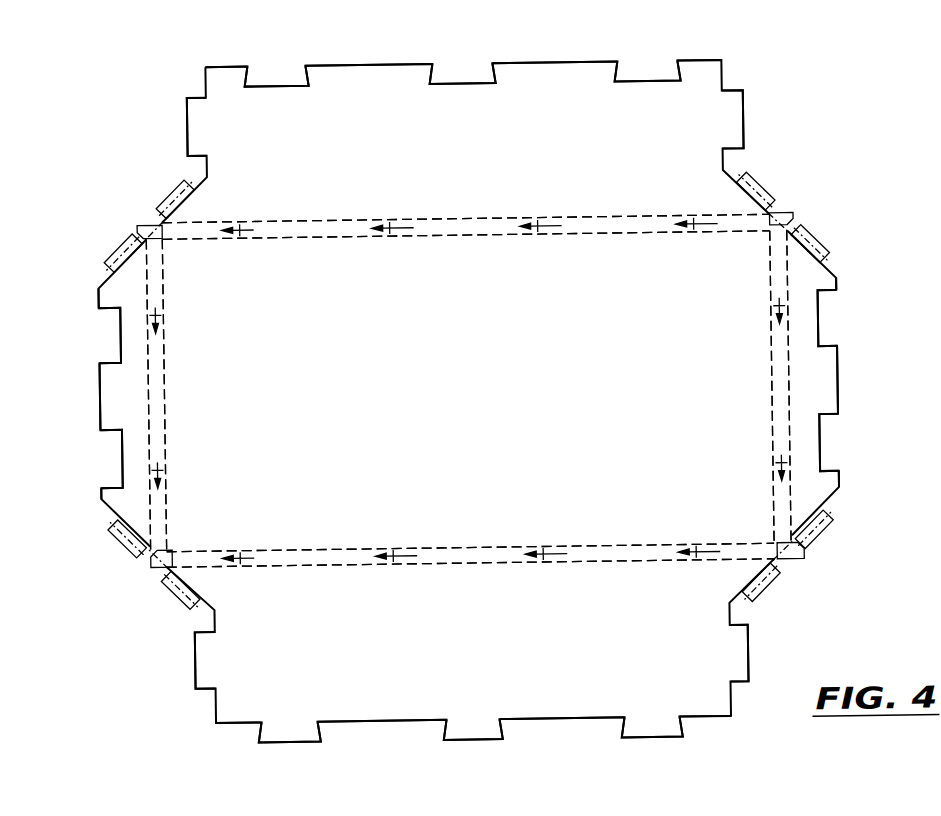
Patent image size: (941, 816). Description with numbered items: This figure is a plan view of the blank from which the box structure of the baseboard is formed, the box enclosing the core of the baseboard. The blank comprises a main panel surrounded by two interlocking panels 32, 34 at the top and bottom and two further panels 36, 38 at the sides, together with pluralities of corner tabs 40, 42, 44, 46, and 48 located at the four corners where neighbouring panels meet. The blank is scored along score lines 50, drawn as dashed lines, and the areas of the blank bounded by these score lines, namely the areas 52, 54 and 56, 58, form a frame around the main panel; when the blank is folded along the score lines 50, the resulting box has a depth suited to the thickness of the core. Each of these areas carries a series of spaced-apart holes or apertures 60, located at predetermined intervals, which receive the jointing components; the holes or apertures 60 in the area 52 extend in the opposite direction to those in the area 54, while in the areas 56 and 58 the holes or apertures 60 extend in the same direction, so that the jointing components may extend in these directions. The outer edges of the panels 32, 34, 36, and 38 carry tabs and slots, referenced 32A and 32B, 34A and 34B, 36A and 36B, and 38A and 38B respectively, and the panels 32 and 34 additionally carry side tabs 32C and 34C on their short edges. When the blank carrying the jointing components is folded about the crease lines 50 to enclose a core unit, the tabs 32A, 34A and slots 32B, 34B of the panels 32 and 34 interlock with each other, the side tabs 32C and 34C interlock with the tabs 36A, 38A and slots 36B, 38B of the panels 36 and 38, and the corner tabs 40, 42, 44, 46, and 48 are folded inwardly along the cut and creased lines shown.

The interlocking panel 32 is at (407, 151).
The tabs 32A is at (236, 64).
The slots 32B is at (283, 84).
The side tabs 32C is at (191, 120).
The interlocking panel 34 is at (492, 642).
The tabs 34A is at (288, 740).
The slots 34B is at (383, 720).
The side tabs 34C is at (192, 660).
The panel 36 is at (813, 338).
The tabs 36A is at (838, 283).
The slots 36B is at (821, 341).
The panel 38 is at (100, 372).
The tabs 38A is at (100, 304).
The slots 38B is at (122, 335).
The corner tab 40 is at (172, 186).
The corner tab 42 is at (162, 203).
The corner tab 44 is at (152, 221).
The corner tab 46 is at (140, 235).
The corner tab 48 is at (112, 252).
The score lines 50 is at (320, 218).
The area of the blank 52 is at (580, 218).
The area of the blank 54 is at (634, 563).
The area of the blank 56 is at (773, 401).
The area of the blank 58 is at (164, 364).
The holes or apertures 60 is at (249, 235).